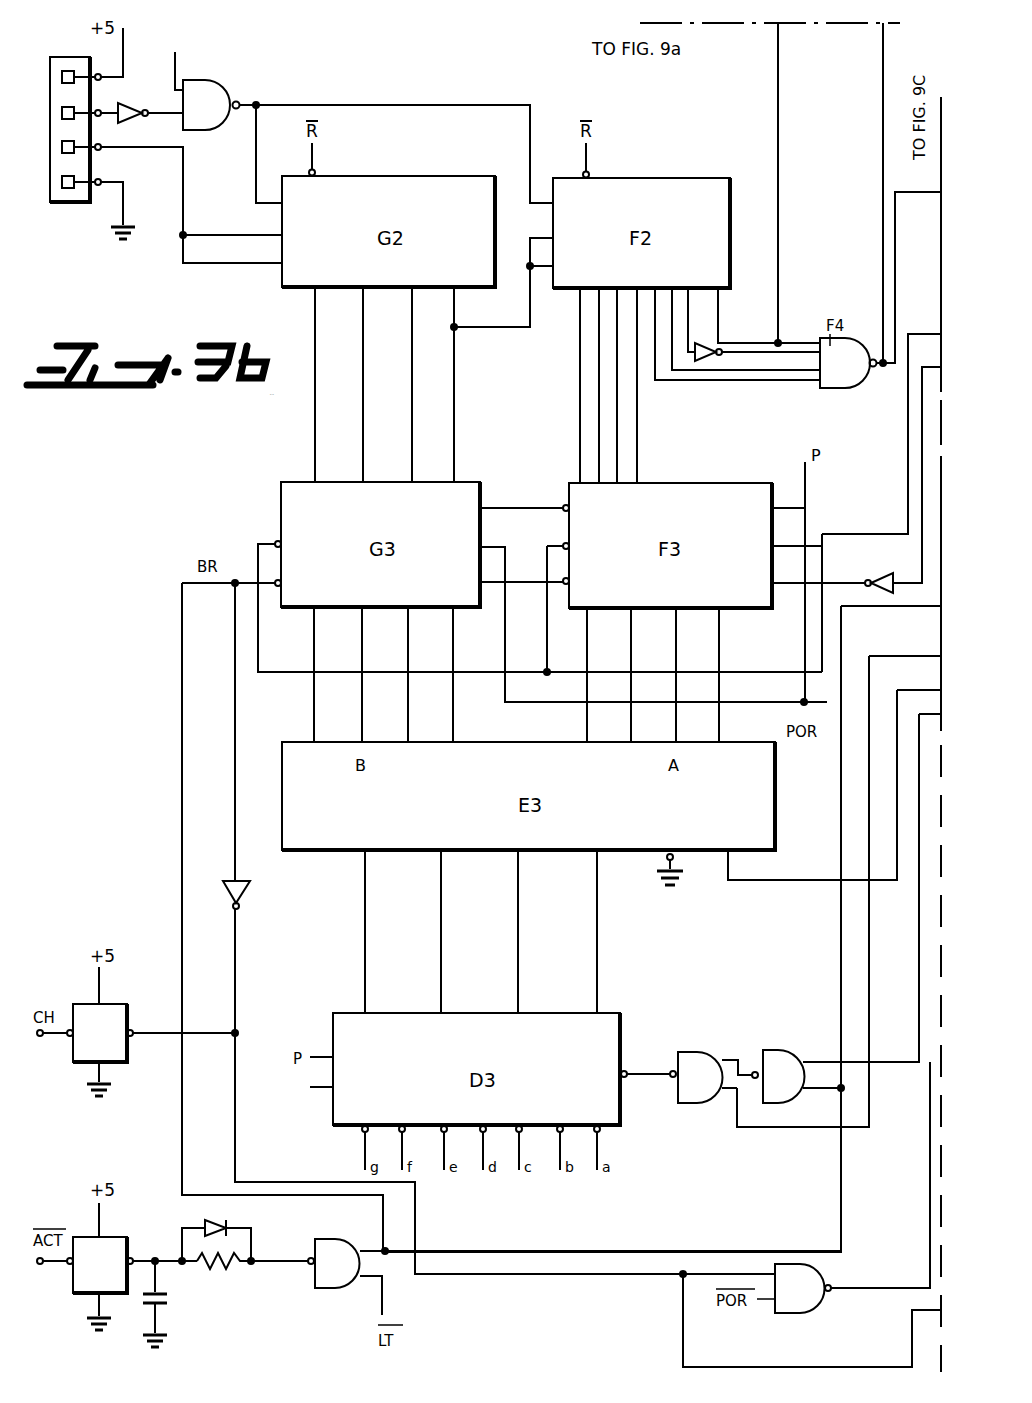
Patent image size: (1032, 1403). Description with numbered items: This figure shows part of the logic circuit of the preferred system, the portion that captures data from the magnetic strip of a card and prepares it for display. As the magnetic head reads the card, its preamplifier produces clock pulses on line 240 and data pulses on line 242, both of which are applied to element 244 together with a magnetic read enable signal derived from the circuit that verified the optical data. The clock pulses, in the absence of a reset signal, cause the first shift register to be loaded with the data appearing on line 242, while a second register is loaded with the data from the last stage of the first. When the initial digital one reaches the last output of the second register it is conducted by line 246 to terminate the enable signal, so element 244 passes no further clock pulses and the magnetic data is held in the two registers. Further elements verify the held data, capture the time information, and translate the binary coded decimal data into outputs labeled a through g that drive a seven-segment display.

The clock pulse line 240 is at (157, 110).
The data pulse line 242 is at (177, 150).
The gating element 244 is at (219, 93).
The output line 246 is at (743, 341).